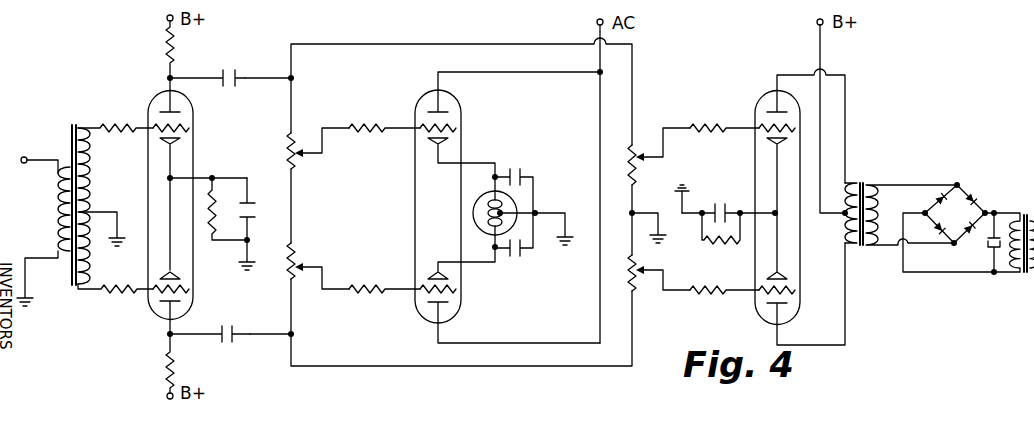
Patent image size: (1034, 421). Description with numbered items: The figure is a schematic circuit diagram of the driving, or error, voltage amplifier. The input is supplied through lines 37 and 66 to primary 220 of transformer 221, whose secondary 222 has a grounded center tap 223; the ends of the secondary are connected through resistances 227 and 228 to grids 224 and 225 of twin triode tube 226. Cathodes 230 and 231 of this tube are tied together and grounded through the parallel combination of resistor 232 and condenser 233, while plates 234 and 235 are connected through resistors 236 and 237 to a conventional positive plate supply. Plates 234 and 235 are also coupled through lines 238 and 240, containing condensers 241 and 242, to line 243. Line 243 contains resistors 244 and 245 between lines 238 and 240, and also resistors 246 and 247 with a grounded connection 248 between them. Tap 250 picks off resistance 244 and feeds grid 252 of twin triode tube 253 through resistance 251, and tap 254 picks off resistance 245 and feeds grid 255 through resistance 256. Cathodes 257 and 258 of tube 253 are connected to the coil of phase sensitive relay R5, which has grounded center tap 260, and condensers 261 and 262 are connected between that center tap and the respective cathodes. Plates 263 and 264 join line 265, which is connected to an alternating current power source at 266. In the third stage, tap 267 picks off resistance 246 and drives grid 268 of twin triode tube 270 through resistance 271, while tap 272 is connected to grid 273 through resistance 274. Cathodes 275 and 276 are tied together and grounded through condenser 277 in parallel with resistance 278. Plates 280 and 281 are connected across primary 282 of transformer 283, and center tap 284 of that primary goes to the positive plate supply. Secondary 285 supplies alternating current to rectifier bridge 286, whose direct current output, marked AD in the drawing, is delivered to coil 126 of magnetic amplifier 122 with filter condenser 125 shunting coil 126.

The input line 37 is at (41, 157).
The input line 66 is at (36, 257).
The magnetic amplifier 122 is at (1025, 207).
The filter condenser 125 is at (992, 256).
The coil 126 is at (1018, 270).
The primary 220 is at (57, 186).
The transformer 221 is at (75, 118).
The secondary 222 is at (92, 175).
The grounded center tap 223 is at (122, 203).
The grid 224 is at (184, 126).
The grid 225 is at (194, 291).
The twin triode tube 226 is at (200, 141).
The resistance 227 is at (128, 122).
The resistance 228 is at (114, 294).
The cathode 230 is at (173, 149).
The cathode 231 is at (176, 272).
The resistor 232 is at (219, 192).
The condenser 233 is at (251, 204).
The plate 234 is at (174, 111).
The plate 235 is at (176, 304).
The resistor 236 is at (166, 42).
The resistor 237 is at (166, 362).
The line 238 is at (264, 78).
The line 240 is at (270, 336).
The condenser 241 is at (223, 70).
The condenser 242 is at (227, 343).
The line 243 is at (370, 43).
The resistor 244 is at (298, 132).
The resistor 245 is at (298, 250).
The resistor 246 is at (642, 148).
The resistor 247 is at (638, 294).
The grounded connection 248 is at (655, 211).
The tap 250 is at (316, 156).
The resistance 251 is at (370, 125).
The grid 252 is at (457, 127).
The twin triode tube 253 is at (470, 140).
The tap 254 is at (313, 272).
The grid 255 is at (457, 296).
The resistance 256 is at (370, 286).
The cathode 257 is at (445, 151).
The cathode 258 is at (447, 271).
The grounded center tap 260 is at (566, 232).
The condenser 261 is at (524, 170).
The condenser 262 is at (526, 254).
The plate 263 is at (432, 100).
The plate 264 is at (428, 312).
The line 265 is at (600, 118).
The A. C. power source connection 266 is at (596, 23).
The tap 267 is at (665, 156).
The grid 268 is at (792, 130).
The twin triode tube 270 is at (752, 98).
The resistance 271 is at (702, 126).
The tap 272 is at (660, 271).
The grid 273 is at (792, 291).
The resistance 274 is at (714, 296).
The cathode 275 is at (770, 153).
The cathode 276 is at (782, 273).
The condenser 277 is at (722, 203).
The resistance 278 is at (722, 247).
The plate 280 is at (774, 92).
The plate 281 is at (782, 305).
The primary 282 is at (851, 247).
The transformer 283 is at (866, 176).
The center tap 284 is at (823, 51).
The secondary 285 is at (879, 188).
The rectifier bridge 286 is at (960, 183).
The relay coil R5 is at (516, 204).
The rectifier unit AD is at (944, 148).